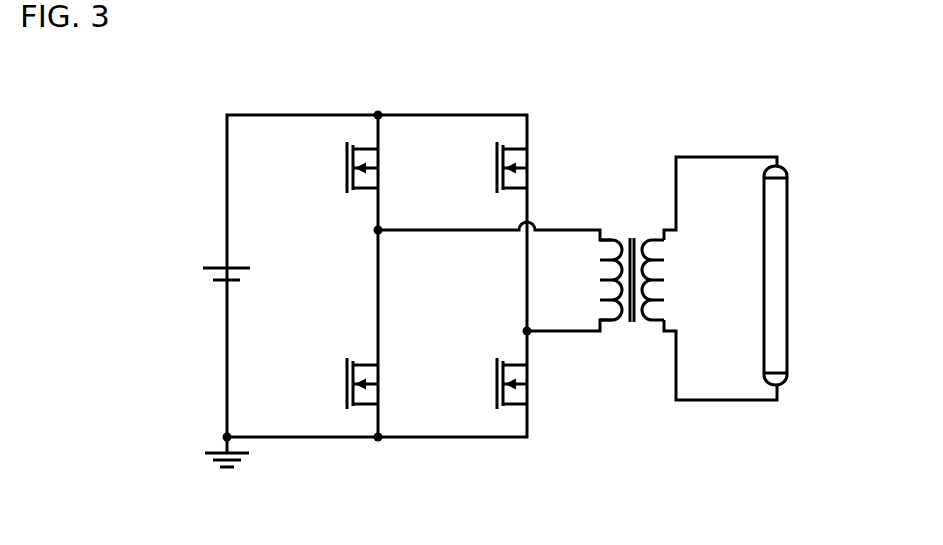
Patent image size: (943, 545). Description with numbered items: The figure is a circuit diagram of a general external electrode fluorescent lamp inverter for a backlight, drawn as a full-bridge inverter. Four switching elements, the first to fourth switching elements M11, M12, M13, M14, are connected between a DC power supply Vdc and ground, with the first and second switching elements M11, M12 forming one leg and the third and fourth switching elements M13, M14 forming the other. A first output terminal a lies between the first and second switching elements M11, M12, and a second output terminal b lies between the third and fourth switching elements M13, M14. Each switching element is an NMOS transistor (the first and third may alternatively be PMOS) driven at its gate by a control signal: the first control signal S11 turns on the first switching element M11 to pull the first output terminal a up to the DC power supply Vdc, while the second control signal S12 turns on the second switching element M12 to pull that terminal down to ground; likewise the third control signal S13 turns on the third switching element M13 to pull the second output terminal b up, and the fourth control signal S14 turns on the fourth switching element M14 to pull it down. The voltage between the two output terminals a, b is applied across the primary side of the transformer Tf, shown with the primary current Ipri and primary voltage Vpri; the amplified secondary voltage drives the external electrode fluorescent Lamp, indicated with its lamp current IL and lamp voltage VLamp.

The first switching element M11 is at (386, 164).
The second switching element M12 is at (386, 380).
The third switching element M13 is at (537, 164).
The fourth switching element M14 is at (537, 380).
The first control signal S11 is at (347, 168).
The second control signal S12 is at (347, 384).
The third control signal S13 is at (497, 168).
The fourth control signal S14 is at (497, 384).
The DC power supply Vdc is at (174, 238).
The first output terminal a is at (482, 232).
The second output terminal b is at (558, 332).
The primary current Ipri is at (494, 246).
The primary voltage Vpri is at (563, 245).
The transformer Tf is at (632, 300).
The lamp current IL is at (746, 172).
The lamp voltage VLamp is at (817, 246).
The discharge lamp Lamp is at (817, 275).